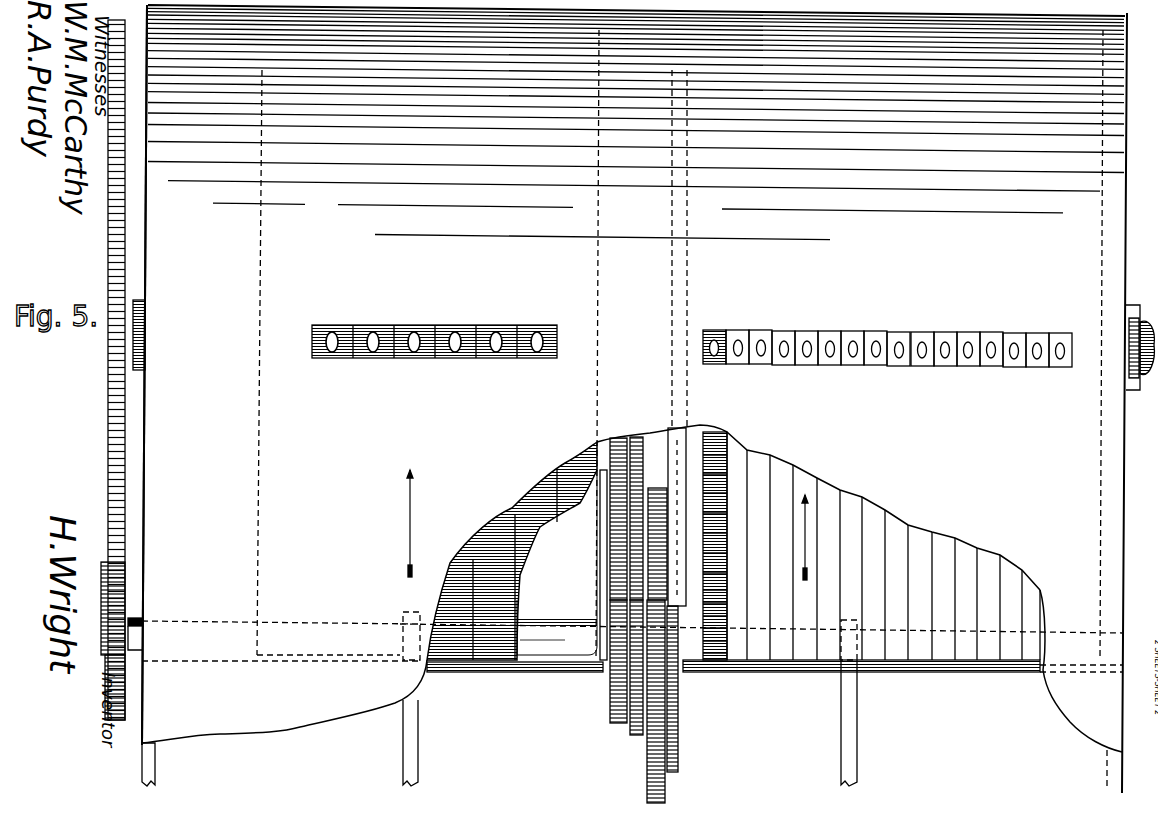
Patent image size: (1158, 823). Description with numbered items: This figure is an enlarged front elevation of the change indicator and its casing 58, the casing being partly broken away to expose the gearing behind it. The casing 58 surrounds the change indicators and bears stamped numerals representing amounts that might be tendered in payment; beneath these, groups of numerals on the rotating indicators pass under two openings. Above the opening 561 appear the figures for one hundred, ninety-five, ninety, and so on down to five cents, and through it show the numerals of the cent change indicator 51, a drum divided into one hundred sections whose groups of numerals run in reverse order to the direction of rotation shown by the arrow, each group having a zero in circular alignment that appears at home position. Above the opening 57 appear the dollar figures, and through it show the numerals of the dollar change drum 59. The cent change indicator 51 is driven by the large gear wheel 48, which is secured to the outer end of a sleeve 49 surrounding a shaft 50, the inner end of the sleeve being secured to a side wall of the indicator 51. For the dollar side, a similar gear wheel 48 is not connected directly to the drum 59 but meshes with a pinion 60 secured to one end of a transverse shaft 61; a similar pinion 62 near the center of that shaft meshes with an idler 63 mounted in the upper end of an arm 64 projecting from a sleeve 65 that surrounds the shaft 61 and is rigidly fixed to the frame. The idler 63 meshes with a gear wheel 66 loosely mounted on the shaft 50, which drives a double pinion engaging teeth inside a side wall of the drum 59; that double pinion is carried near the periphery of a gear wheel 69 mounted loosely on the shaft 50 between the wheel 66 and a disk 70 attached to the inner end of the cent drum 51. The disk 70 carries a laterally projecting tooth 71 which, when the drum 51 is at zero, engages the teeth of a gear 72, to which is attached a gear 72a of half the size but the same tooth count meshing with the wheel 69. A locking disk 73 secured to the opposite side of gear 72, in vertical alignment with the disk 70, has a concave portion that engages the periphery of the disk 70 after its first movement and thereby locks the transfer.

The gear wheel 48 is at (110, 207).
The sleeve 49 is at (1138, 318).
The shaft 50 is at (1141, 372).
The cent change indicator 51 is at (783, 658).
The opening 57 is at (465, 360).
The casing 58 is at (165, 397).
The dollar change drum 59 is at (537, 548).
The pinion 60 is at (104, 586).
The transverse shaft 61 is at (135, 622).
The pinion 62 is at (612, 727).
The idler 63 is at (610, 455).
The arm 64 is at (598, 589).
The sleeve 65 is at (520, 672).
The gear wheel 66 is at (625, 460).
The gear wheel 69 is at (655, 445).
The disk 70 is at (677, 448).
The laterally projecting tooth 71 is at (660, 488).
The gear 72 is at (663, 790).
The gear 72a is at (633, 738).
The locking disk 73 is at (677, 737).
The opening 561 is at (806, 364).